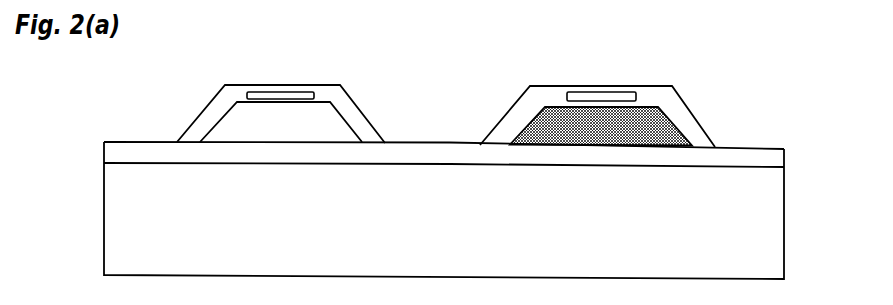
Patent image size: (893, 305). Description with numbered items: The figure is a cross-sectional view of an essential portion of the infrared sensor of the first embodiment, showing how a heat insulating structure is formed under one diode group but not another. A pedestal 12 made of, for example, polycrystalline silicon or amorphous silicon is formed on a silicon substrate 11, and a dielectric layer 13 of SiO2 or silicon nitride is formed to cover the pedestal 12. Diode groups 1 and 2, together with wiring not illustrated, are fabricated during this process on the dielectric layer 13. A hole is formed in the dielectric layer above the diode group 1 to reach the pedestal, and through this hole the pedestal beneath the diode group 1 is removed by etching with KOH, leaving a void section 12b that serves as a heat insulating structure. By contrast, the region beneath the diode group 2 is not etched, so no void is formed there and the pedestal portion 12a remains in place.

The diode group 1 is at (300, 93).
The diode group 2 is at (563, 92).
The silicon substrate 11 is at (728, 240).
The pedestal 12 is at (737, 160).
The pedestal portion 12a is at (637, 130).
The void section 12b is at (233, 132).
The dielectric layer 13 is at (653, 95).